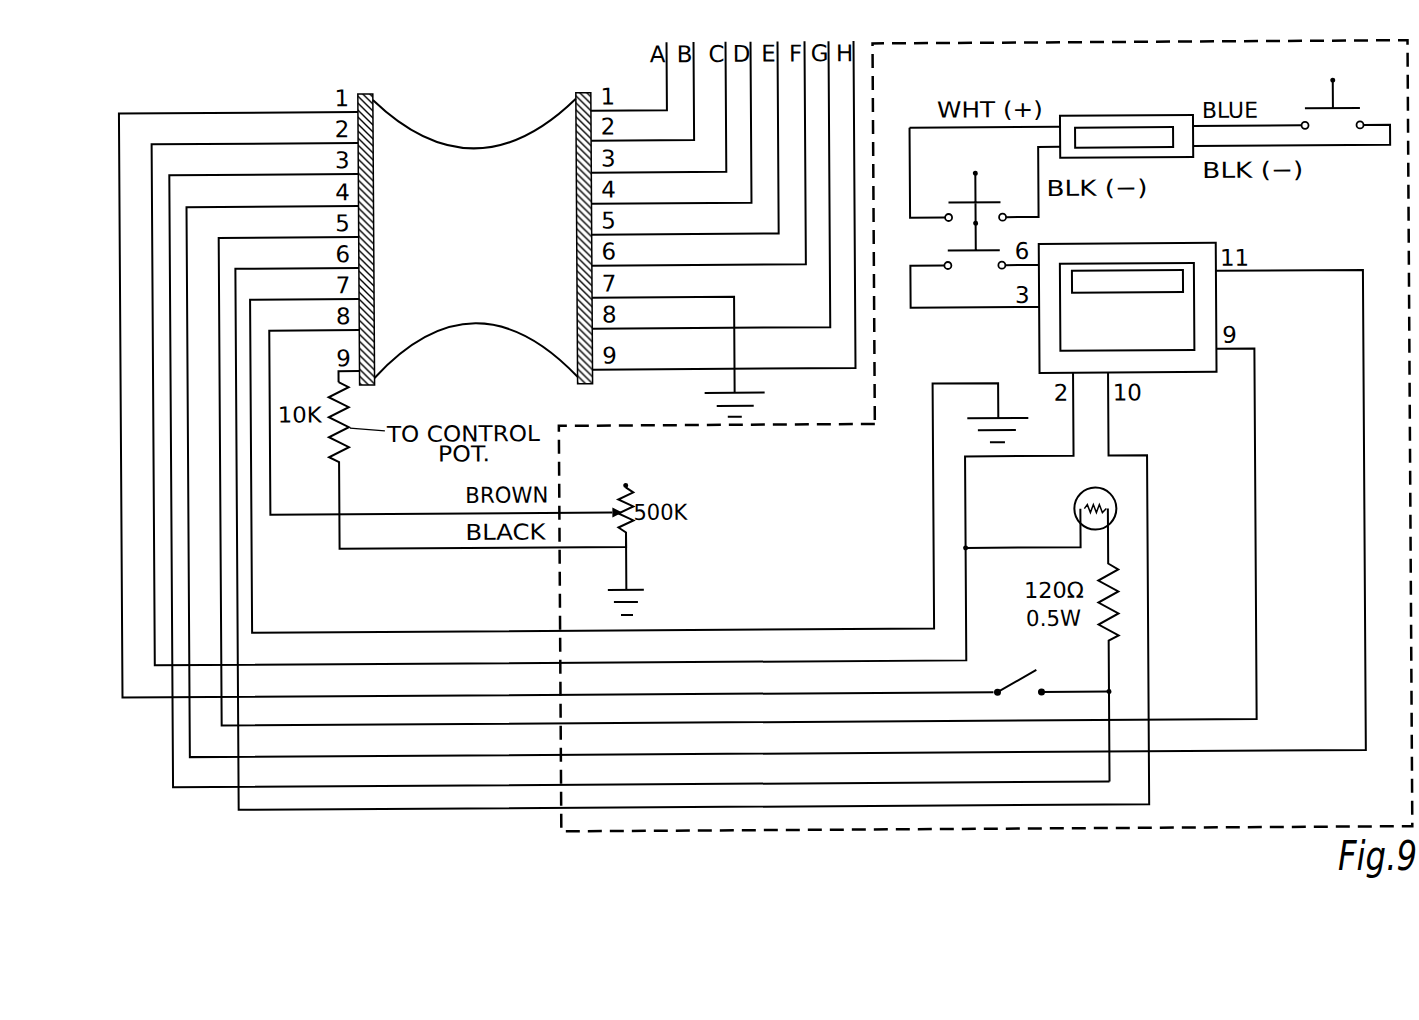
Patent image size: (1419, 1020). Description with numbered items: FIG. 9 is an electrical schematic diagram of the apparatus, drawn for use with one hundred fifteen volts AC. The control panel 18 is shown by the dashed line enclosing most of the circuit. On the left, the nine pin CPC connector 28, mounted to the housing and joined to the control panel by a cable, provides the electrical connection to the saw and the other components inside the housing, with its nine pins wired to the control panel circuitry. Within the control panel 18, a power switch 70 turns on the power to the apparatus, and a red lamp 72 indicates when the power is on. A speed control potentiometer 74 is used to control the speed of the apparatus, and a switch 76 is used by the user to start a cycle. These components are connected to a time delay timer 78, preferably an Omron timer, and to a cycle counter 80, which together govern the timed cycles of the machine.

The control panel 18 is at (985, 435).
The 9 pin CPC connector 28 is at (475, 233).
The power switch 70 is at (1045, 670).
The red lamp 72 is at (1066, 501).
The speed control potentiometer 74 is at (663, 539).
The switch 76 is at (961, 214).
The time delay timer 78 is at (1128, 296).
The cycle counter 80 is at (1127, 114).